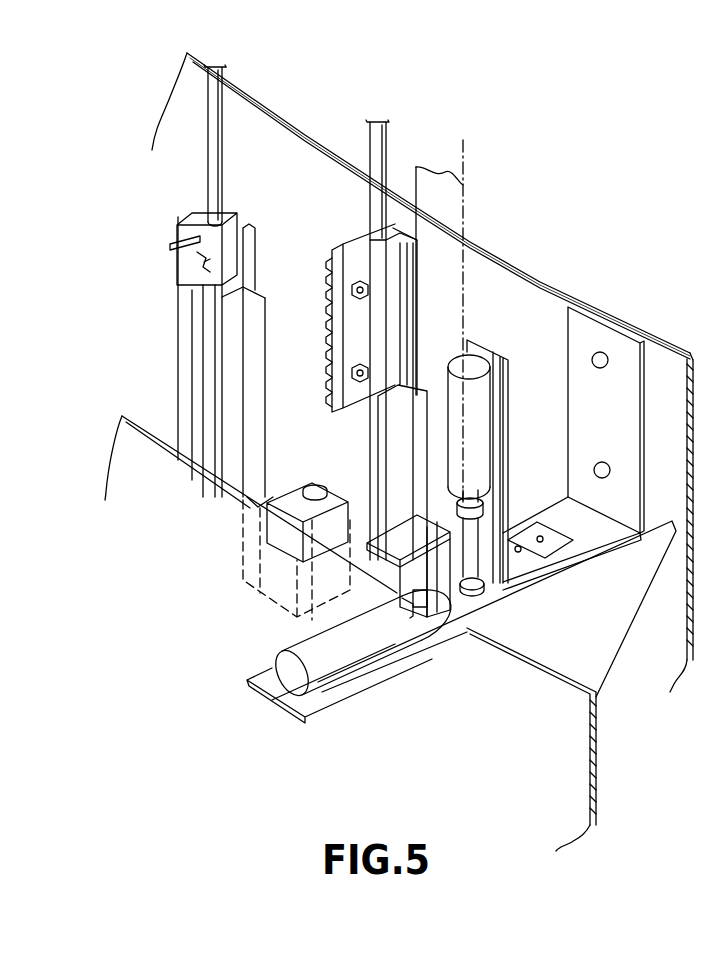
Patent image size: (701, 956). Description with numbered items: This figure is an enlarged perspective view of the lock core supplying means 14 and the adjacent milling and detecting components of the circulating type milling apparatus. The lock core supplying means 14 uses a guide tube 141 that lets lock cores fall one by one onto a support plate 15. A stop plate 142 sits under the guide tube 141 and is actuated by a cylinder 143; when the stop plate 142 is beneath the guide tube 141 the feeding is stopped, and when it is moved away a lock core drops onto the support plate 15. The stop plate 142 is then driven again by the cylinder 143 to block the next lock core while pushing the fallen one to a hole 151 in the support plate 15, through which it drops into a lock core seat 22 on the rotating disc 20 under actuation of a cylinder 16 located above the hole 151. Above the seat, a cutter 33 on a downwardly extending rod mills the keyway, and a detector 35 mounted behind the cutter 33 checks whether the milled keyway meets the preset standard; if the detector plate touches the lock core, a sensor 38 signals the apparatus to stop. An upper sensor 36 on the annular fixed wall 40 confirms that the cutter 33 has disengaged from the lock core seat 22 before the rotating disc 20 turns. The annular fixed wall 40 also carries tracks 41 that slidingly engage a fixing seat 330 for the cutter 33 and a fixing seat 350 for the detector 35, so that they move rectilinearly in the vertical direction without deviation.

The lock core supplying means 14 is at (546, 320).
The support plate 15 is at (580, 564).
The cylinder 16 is at (477, 398).
The rotating disc 20 is at (596, 688).
The lock core seat 22 is at (288, 513).
The cutter 33 is at (348, 250).
The detector 35 is at (172, 248).
The upper sensor 36 is at (398, 213).
The sensor 38 is at (187, 262).
The annular fixed wall 40 is at (305, 138).
The track 41 is at (267, 312).
The guide tube 141 is at (462, 187).
The stop plate 142 is at (418, 600).
The cylinder 143 is at (330, 662).
The hole 151 is at (478, 592).
The fixing seat 330 is at (405, 268).
The fixing seat 350 is at (252, 253).